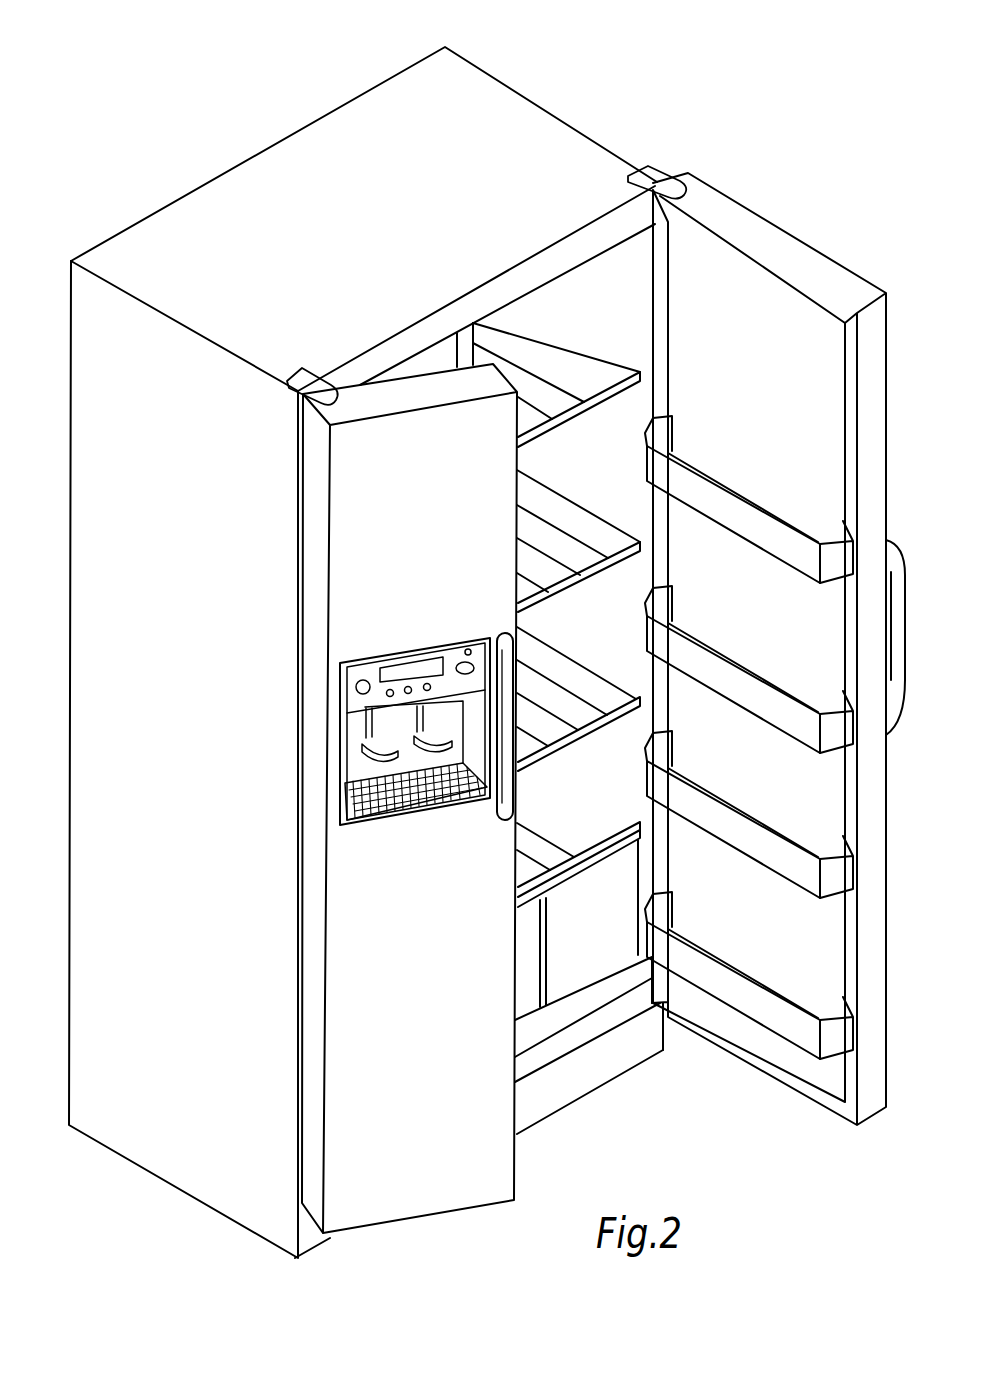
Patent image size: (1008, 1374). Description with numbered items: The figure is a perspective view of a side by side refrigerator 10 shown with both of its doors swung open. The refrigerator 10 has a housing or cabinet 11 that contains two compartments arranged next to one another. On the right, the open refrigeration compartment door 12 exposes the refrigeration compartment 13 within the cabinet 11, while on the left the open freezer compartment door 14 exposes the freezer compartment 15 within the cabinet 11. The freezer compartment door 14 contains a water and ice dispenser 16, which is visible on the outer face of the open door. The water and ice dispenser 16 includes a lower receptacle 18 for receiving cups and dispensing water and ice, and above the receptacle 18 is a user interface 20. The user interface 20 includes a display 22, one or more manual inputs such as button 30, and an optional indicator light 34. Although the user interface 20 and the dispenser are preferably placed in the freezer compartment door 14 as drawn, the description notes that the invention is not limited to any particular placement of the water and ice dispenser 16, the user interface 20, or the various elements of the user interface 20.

The refrigerator 10 is at (583, 53).
The cabinet 11 is at (123, 254).
The refrigeration compartment door 12 is at (777, 233).
The refrigeration compartment 13 is at (632, 320).
The freezer compartment door 14 is at (492, 1157).
The freezer compartment 15 is at (420, 362).
The water and ice dispenser 16 is at (410, 816).
The lower receptacle 18 is at (352, 743).
The user interface 20 is at (370, 670).
The display 22 is at (407, 672).
The button 30 is at (357, 698).
The indicator light 34 is at (477, 651).